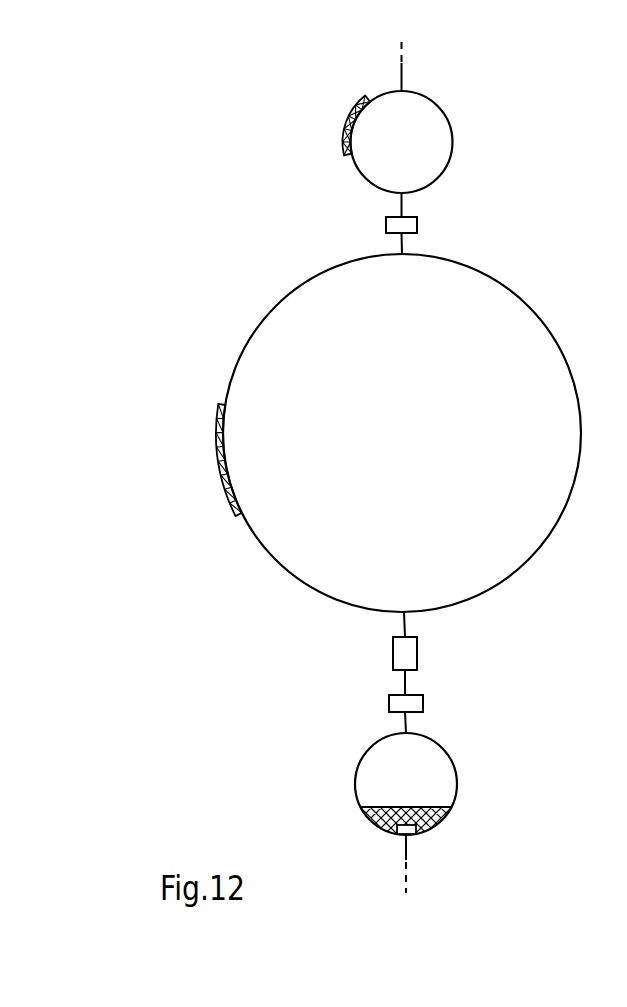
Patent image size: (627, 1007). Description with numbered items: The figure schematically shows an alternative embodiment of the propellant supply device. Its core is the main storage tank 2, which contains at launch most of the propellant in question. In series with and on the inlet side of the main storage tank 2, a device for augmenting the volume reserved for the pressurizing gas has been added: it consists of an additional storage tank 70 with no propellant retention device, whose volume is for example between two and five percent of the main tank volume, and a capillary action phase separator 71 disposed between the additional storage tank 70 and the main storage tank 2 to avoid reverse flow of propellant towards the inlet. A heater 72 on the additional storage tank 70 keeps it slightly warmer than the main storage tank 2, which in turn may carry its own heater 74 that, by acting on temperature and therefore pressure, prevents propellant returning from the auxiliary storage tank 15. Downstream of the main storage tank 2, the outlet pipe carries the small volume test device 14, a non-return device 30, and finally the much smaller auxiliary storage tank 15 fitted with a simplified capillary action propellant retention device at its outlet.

The main storage tank 2 is at (540, 316).
The small volume test device 14 is at (418, 653).
The auxiliary storage tank 15 is at (455, 767).
The non-return device 30 is at (423, 702).
The additional storage tank 70 is at (452, 143).
The capillary action phase separator 71 is at (418, 226).
The heater 72 is at (343, 140).
The heater 74 is at (218, 453).